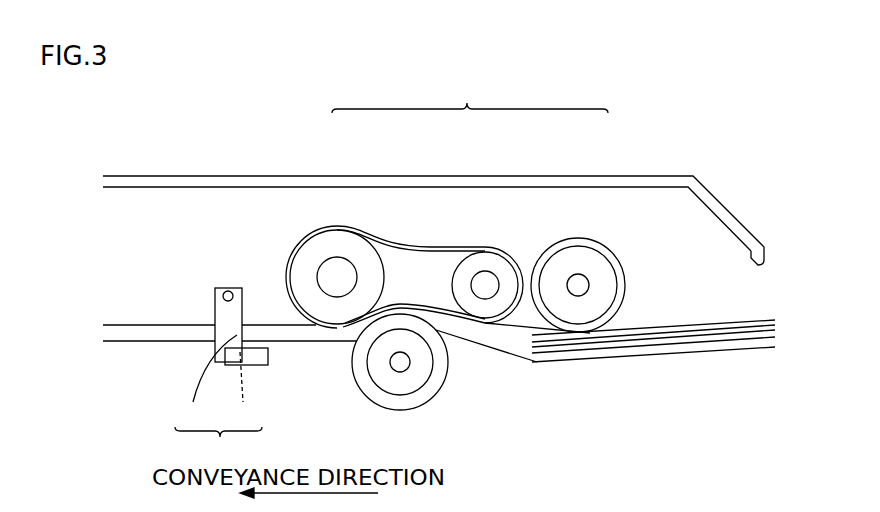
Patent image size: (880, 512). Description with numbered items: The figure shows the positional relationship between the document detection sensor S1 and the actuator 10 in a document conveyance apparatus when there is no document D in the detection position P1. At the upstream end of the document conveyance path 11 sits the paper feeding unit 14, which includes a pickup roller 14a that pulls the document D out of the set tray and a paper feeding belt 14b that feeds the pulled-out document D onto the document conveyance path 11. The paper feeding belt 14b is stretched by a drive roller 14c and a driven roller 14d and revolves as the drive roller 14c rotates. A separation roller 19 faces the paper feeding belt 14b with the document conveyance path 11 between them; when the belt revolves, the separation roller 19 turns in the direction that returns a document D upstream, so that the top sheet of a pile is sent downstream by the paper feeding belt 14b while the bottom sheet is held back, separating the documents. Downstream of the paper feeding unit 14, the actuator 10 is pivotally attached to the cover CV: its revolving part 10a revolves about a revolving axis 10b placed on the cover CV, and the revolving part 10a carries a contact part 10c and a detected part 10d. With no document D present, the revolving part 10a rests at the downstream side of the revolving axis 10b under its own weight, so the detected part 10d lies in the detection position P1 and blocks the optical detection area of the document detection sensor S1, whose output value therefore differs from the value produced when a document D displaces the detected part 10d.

The actuator 10 is at (213, 339).
The revolving part 10a is at (218, 444).
The revolving axis 10b is at (227, 291).
The contact part 10c is at (206, 382).
The detected part 10d is at (242, 390).
The document conveyance path 11 is at (132, 333).
The paper feeding unit 14 is at (470, 96).
The pickup roller 14a is at (568, 257).
The paper feeding belt 14b is at (408, 246).
The drive roller 14c is at (332, 245).
The driven roller 14d is at (483, 258).
The separation roller 19 is at (400, 401).
The cover CV is at (203, 181).
The document D is at (677, 323).
The detection position P1 is at (248, 333).
The document detection sensor S1 is at (268, 356).